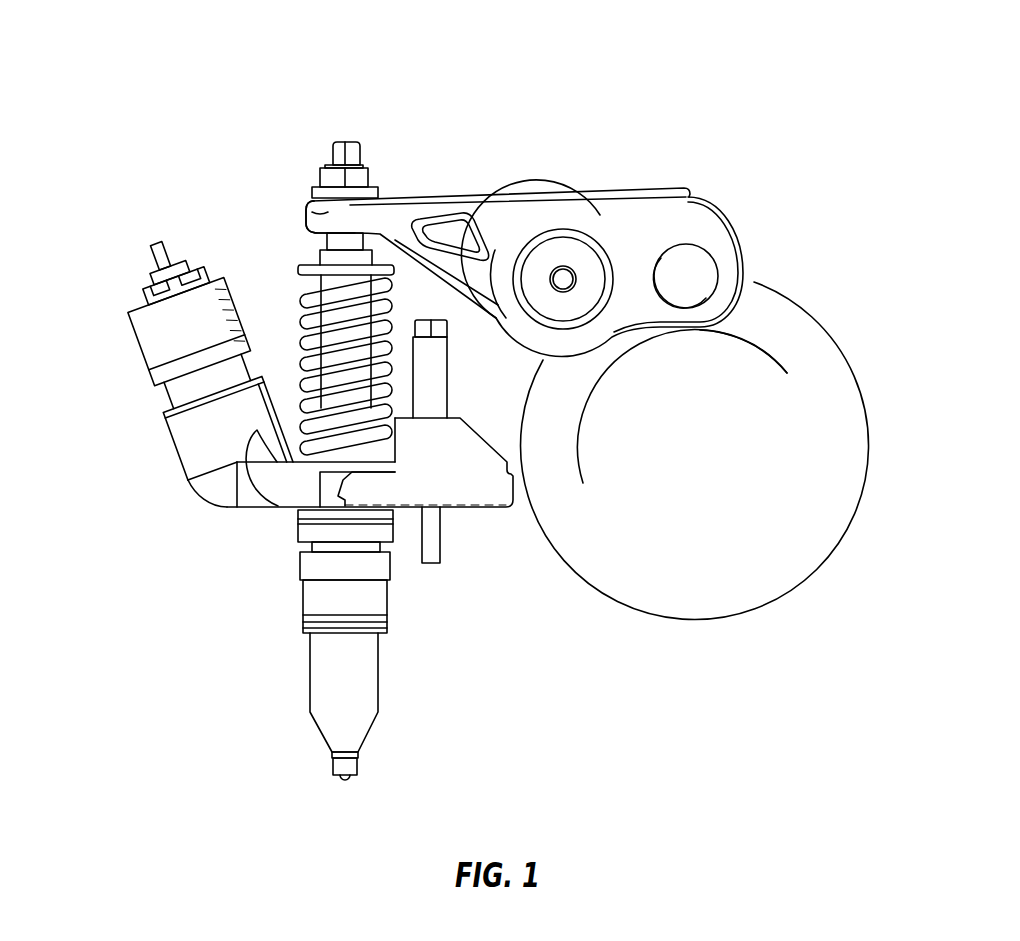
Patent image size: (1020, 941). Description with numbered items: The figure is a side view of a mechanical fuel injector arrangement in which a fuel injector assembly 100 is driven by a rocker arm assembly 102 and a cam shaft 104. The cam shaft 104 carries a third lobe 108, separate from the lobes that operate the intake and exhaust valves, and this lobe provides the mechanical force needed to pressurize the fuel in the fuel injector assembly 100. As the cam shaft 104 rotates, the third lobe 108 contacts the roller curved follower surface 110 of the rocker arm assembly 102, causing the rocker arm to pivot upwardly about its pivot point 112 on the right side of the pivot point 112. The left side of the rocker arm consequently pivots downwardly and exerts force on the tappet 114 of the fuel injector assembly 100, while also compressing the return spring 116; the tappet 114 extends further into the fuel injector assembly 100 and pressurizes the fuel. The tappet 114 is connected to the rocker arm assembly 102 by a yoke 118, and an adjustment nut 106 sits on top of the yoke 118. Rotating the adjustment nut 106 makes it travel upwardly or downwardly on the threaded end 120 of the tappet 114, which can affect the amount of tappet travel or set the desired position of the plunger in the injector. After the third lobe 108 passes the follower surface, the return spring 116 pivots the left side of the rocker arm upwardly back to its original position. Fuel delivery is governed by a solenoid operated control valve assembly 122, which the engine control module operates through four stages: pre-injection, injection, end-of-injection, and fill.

The fuel injector assembly 100 is at (730, 44).
The rocker arm assembly 102 is at (488, 194).
The cam shaft 104 is at (762, 292).
The adjustment nut 106 is at (320, 178).
The third lobe 108 is at (610, 358).
The roller curved follower surface 110 is at (700, 330).
The pivot point 112 is at (563, 279).
The tappet 114 is at (322, 262).
The return spring 116 is at (300, 352).
The yoke 118 is at (320, 220).
The threaded end 120 is at (346, 152).
The control valve assembly 122 is at (118, 349).